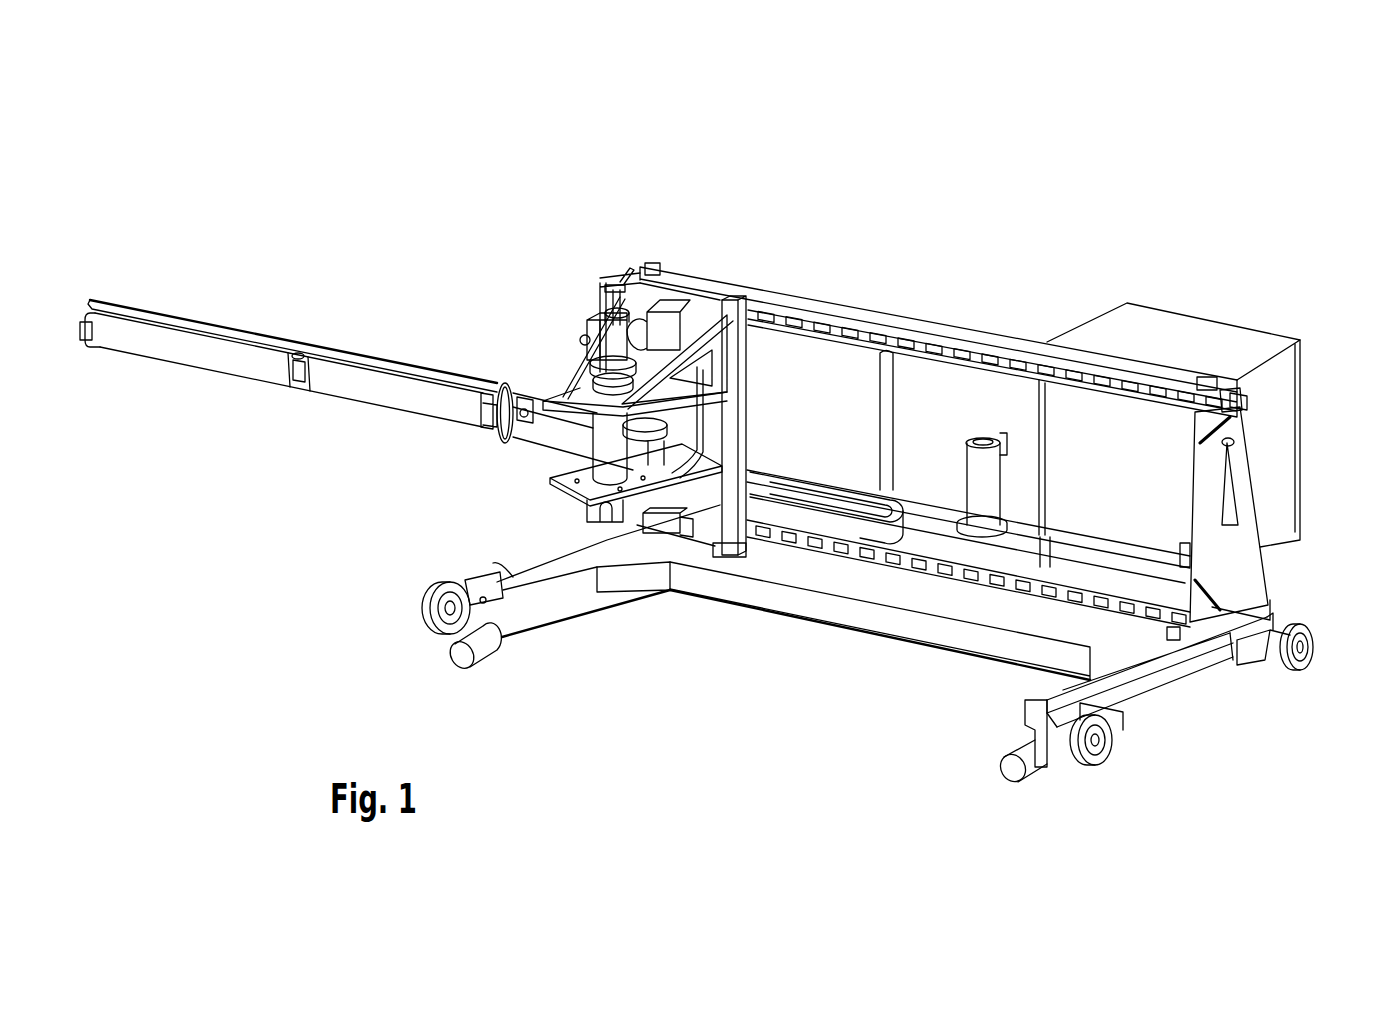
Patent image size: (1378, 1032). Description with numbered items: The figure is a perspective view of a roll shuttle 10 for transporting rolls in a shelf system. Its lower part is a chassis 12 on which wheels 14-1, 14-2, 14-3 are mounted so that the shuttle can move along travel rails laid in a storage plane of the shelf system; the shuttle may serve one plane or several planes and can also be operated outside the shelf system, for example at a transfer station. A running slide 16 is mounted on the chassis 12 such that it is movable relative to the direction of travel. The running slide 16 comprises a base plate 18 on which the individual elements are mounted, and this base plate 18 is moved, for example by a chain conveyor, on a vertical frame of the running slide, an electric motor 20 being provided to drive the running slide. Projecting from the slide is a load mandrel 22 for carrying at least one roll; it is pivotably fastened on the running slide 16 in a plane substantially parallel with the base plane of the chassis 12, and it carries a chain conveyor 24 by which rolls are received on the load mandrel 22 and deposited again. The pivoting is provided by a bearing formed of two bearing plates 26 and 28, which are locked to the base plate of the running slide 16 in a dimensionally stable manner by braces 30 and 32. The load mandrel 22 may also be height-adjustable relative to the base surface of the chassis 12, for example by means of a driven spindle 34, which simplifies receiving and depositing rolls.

The roll shuttle 10 is at (1148, 168).
The chassis 12 is at (1186, 690).
The wheel 14-1 is at (449, 582).
The wheel 14-2 is at (1091, 790).
The wheel 14-3 is at (1300, 618).
The running slide 16 is at (771, 403).
The base plate 18 is at (746, 612).
The electric motor 20 is at (583, 318).
The load mandrel 22 is at (198, 356).
The chain conveyor 24 is at (366, 354).
The bearing plate 26 is at (548, 484).
The bearing plate 28 is at (744, 372).
The brace 30 is at (682, 265).
The brace 32 is at (733, 446).
The spindle 34 is at (648, 495).